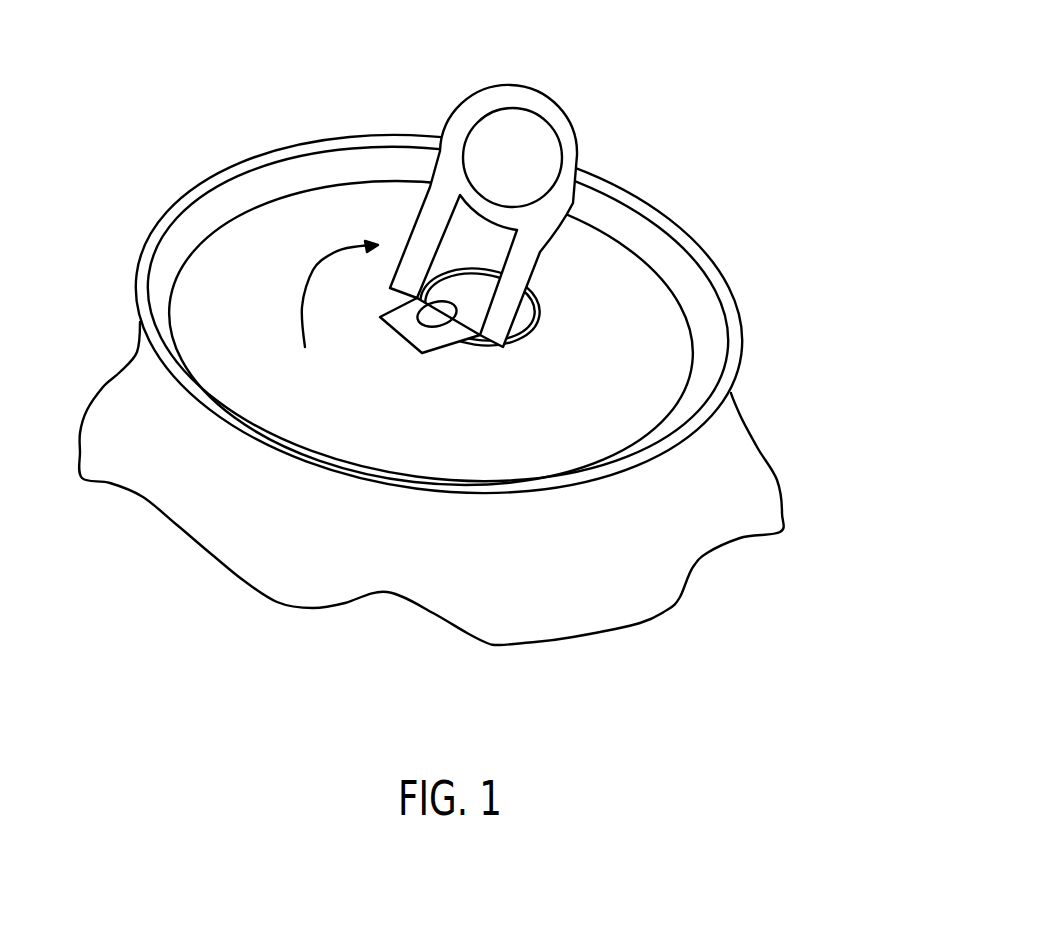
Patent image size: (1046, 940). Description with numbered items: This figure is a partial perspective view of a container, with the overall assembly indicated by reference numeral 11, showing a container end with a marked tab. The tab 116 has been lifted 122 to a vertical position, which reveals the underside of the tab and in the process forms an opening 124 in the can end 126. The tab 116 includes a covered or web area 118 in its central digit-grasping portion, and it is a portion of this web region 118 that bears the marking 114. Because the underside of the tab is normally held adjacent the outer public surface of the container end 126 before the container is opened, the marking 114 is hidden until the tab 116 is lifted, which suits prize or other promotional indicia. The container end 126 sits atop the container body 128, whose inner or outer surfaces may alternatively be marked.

The beverage container 11 is at (501, 332).
The marking 114 is at (500, 128).
The tab 116 is at (522, 186).
The web area 118 is at (527, 192).
The lifted 122 is at (325, 263).
The opening 124 is at (560, 317).
The can end 126 is at (643, 357).
The container body 128 is at (717, 507).